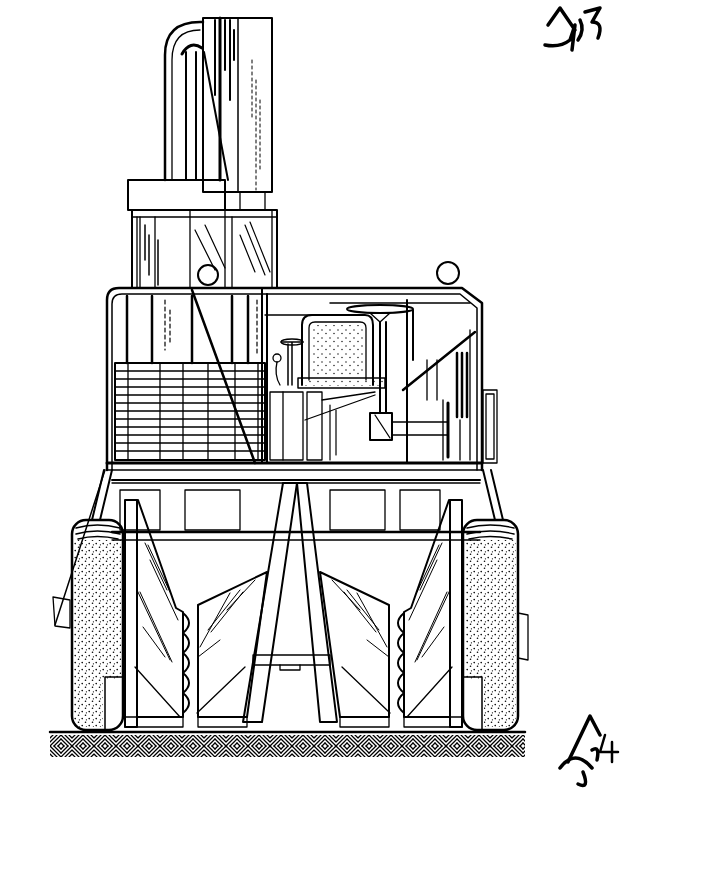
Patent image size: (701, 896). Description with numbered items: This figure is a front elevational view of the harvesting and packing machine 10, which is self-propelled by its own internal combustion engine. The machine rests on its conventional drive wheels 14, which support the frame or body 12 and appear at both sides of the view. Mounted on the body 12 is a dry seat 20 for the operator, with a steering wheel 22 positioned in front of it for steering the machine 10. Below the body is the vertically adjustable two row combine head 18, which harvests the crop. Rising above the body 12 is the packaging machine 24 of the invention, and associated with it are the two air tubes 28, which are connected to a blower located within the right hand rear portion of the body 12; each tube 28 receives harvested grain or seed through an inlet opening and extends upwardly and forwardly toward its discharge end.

The harvesting and packing machine 10 is at (500, 446).
The frame or body 12 is at (142, 465).
The drive wheels 14 is at (95, 520).
The two row combine head 18 is at (484, 494).
The dry seat 20 is at (345, 300).
The steering wheel 22 is at (382, 305).
The packaging machine 24 is at (160, 181).
The air tubes 28 is at (177, 129).